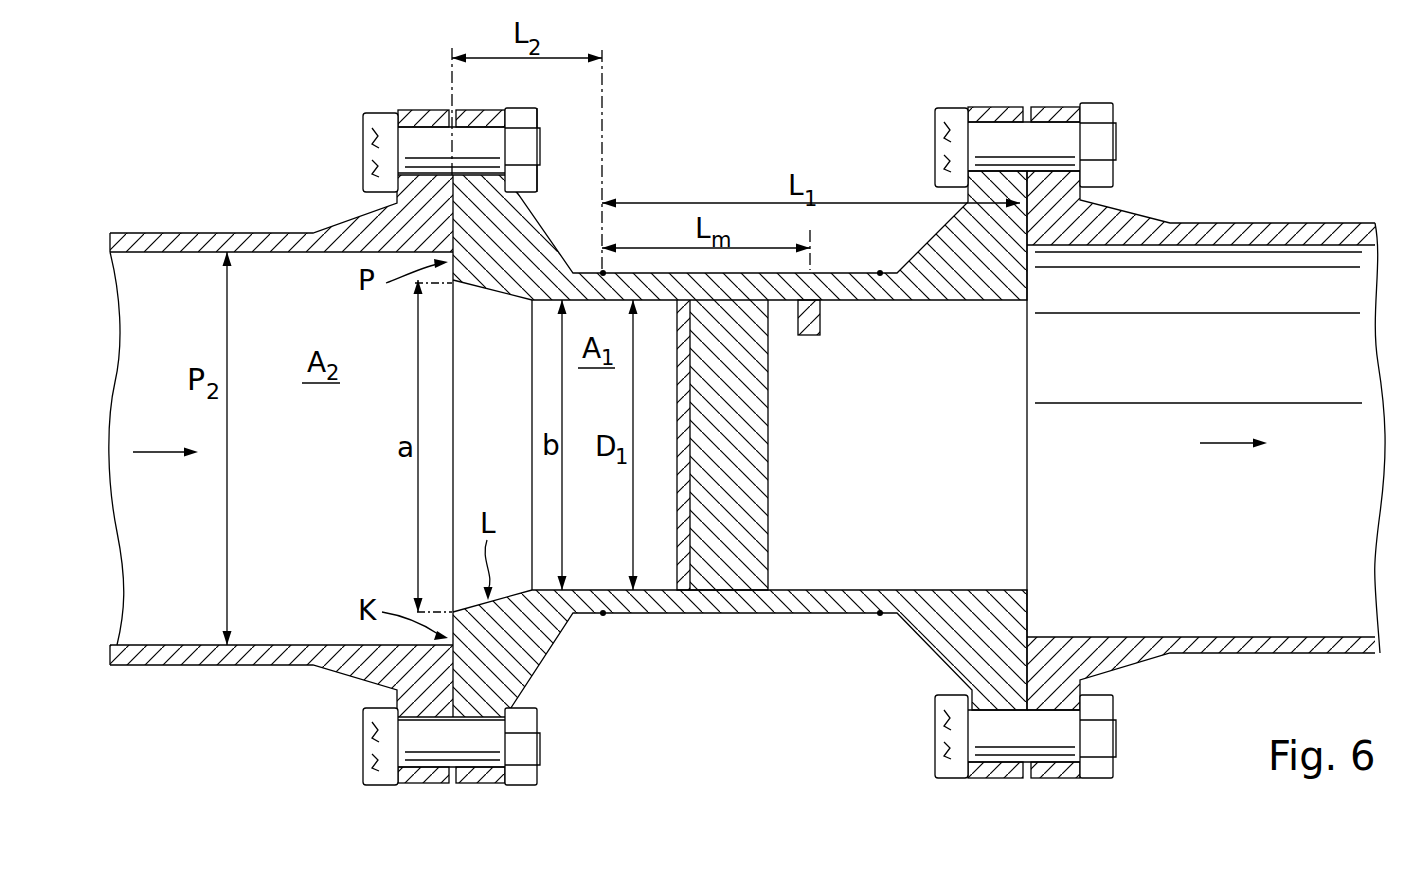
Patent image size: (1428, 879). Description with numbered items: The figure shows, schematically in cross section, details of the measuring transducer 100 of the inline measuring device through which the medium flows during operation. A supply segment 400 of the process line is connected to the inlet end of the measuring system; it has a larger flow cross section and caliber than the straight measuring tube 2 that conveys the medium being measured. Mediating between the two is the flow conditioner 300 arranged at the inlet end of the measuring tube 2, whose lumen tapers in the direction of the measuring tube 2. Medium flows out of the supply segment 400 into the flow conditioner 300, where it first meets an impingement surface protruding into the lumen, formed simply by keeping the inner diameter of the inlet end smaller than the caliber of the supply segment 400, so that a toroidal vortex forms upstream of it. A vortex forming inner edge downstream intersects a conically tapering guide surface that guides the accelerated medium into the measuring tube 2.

The measuring tube 2 is at (818, 600).
The measuring transducer 100 is at (740, 487).
The flow conditioner 300 is at (545, 655).
The supply segment 400 is at (180, 666).